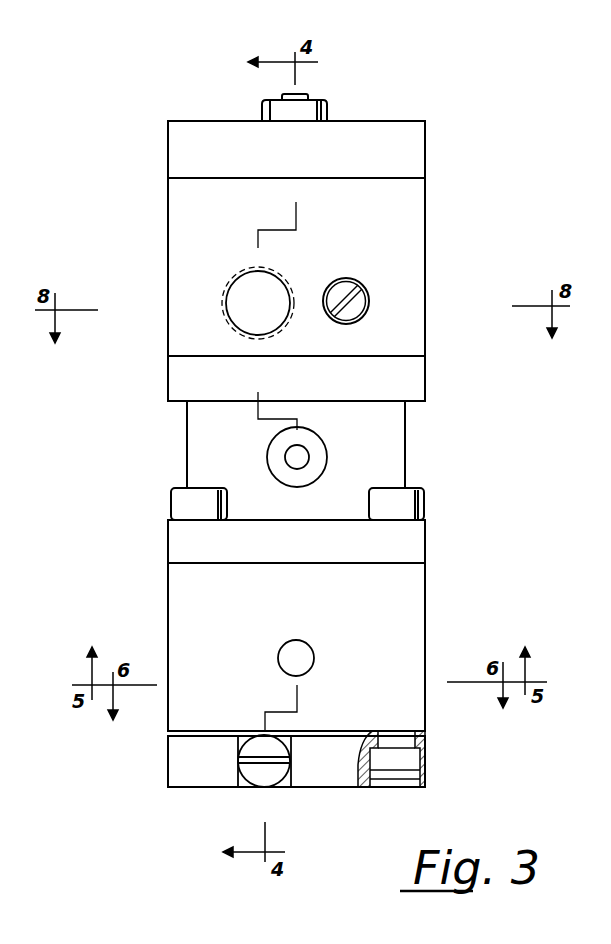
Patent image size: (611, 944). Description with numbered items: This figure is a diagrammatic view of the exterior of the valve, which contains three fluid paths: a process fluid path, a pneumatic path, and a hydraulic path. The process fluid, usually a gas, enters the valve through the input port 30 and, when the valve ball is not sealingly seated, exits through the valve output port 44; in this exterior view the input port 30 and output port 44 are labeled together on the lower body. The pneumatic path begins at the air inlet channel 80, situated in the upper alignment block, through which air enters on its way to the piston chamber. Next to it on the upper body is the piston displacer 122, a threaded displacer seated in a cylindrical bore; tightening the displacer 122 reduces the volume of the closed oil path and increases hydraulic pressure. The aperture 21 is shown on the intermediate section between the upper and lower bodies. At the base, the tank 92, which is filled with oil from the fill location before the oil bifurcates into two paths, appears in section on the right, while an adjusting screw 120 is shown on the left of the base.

The air inlet channel 80 is at (237, 288).
The piston displacer 122 is at (353, 282).
The aperture 21 is at (327, 457).
The input port 30 is at (338, 639).
The valve output port 44 is at (304, 643).
The adjusting screw 120 is at (250, 787).
The tank 92 is at (427, 762).